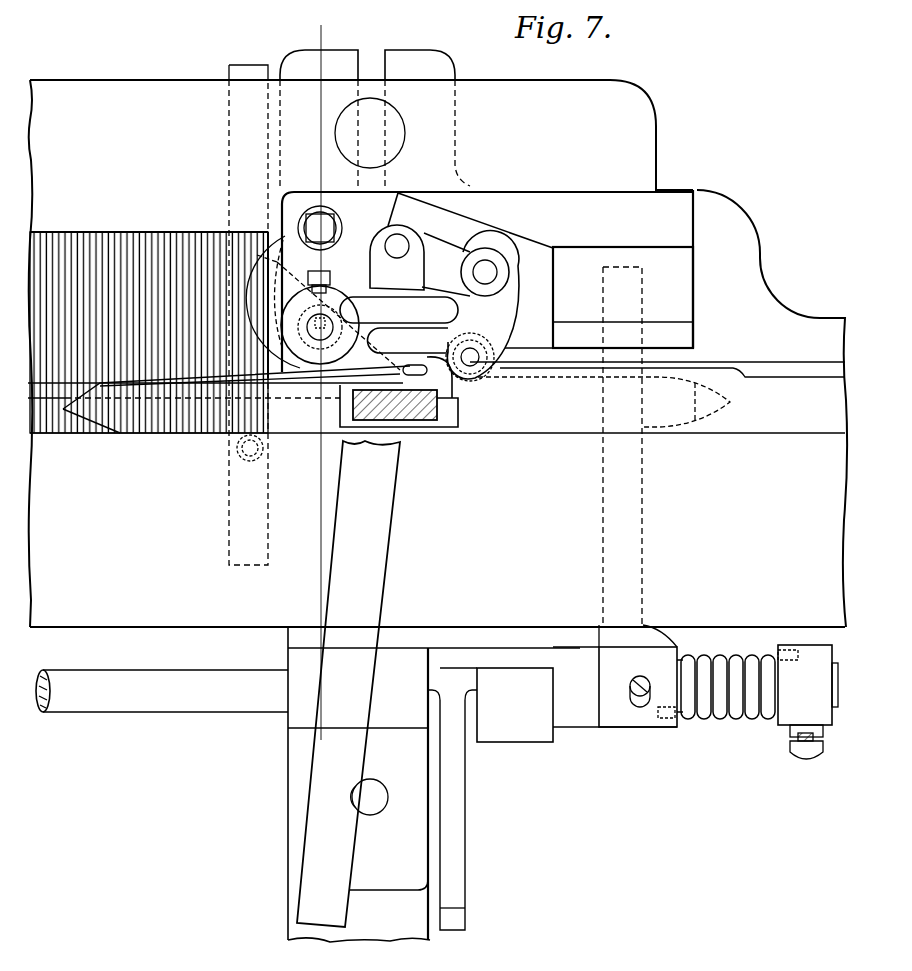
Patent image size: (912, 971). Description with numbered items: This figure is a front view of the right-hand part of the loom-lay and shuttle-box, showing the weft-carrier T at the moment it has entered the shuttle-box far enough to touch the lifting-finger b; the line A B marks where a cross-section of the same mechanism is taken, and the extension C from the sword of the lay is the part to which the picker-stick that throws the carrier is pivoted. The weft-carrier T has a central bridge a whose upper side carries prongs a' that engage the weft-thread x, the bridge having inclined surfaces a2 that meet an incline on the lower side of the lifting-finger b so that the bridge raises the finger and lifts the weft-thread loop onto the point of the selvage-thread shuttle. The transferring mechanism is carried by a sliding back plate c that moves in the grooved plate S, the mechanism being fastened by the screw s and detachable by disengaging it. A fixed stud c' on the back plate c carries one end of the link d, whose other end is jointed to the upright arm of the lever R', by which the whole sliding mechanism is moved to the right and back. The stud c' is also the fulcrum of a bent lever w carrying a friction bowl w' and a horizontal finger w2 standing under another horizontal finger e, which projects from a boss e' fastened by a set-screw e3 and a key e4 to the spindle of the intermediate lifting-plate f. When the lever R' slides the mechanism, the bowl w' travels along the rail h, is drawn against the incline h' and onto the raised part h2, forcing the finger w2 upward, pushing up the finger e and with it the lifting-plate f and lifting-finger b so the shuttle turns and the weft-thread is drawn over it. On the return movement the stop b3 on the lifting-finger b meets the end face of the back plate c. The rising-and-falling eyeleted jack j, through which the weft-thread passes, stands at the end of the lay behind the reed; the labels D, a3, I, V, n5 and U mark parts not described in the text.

The section line A is at (318, 371).
The section line B is at (438, 423).
The extension C is at (486, 496).
The die block D is at (149, 332).
The grooved plate S is at (623, 279).
The fastening-screw s is at (320, 228).
The lever R' is at (360, 576).
The connecting plate or link d is at (446, 264).
The sliding frame or back plate c is at (396, 280).
The fixed stud c' is at (485, 272).
The bent lever w is at (482, 305).
The friction roller or bowl w' is at (470, 357).
The horizontal finger w2 is at (408, 340).
The horizontal finger e is at (399, 311).
The boss e' is at (338, 316).
The set-screw e3 is at (329, 279).
The key e4 is at (321, 327).
The intermediate lifting-plate f is at (320, 325).
The lifting or transferring finger b is at (357, 319).
The projecting stop b3 is at (256, 250).
The jack j is at (239, 349).
The rail h is at (657, 394).
The incline h' is at (515, 370).
The raised part h2 is at (566, 364).
The weft-carrier T is at (219, 399).
The weft-thread x is at (161, 378).
The central bridge a is at (395, 405).
The prongs or fingers a' is at (415, 367).
The inclined surfaces a2 is at (399, 406).
The housing lip a3 is at (348, 391).
The shaft I is at (162, 691).
The bracket V is at (558, 694).
The stem n5 is at (452, 810).
The block U is at (638, 676).